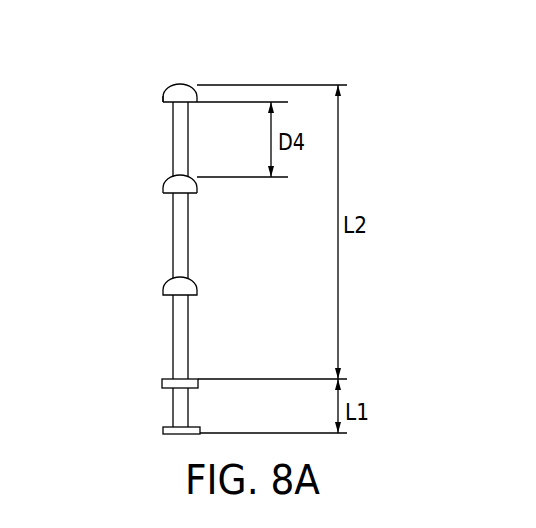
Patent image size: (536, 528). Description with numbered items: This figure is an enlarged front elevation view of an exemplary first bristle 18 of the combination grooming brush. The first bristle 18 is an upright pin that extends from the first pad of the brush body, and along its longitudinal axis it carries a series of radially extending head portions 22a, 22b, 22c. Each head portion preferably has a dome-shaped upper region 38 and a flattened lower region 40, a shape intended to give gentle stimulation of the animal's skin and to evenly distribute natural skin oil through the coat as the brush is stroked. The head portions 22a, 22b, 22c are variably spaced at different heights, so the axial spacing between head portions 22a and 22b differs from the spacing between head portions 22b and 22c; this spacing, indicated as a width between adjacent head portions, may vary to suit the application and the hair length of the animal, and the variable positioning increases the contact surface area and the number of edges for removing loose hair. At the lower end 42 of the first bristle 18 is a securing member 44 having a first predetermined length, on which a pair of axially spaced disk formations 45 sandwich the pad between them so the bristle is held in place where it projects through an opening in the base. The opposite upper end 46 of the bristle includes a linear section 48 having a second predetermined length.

The first bristle 18 is at (189, 270).
The head portion 22a is at (194, 88).
The head portion 22b is at (197, 186).
The head portion 22c is at (197, 287).
The dome-shaped upper region 38 is at (170, 86).
The flattened lower region 40 is at (172, 106).
The lower end 42 is at (165, 430).
The securing member 44 is at (188, 400).
The disk formations 45 is at (166, 381).
The upper end 46 is at (165, 92).
The linear section 48 is at (173, 315).